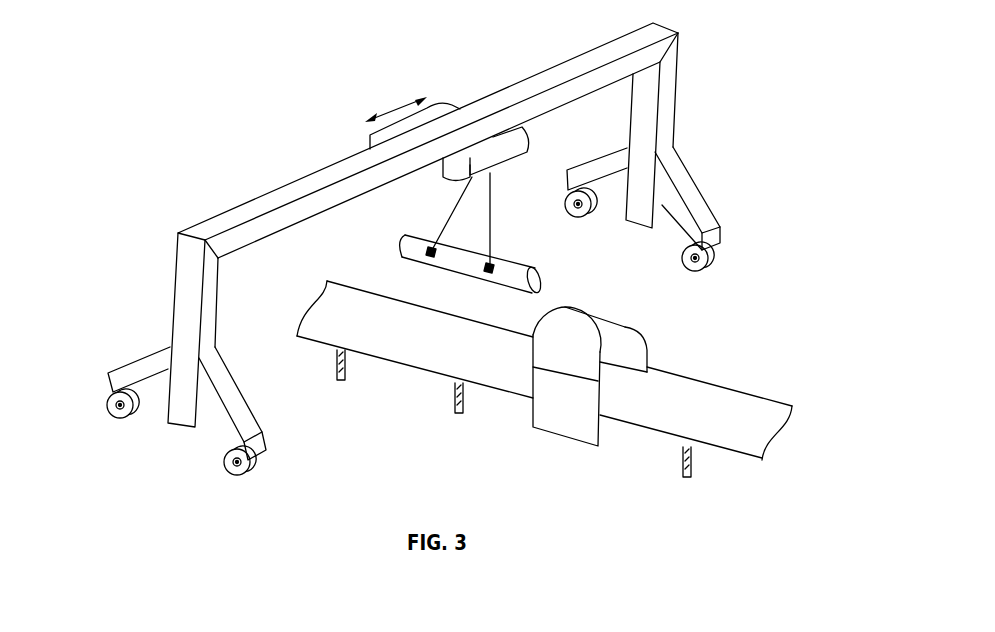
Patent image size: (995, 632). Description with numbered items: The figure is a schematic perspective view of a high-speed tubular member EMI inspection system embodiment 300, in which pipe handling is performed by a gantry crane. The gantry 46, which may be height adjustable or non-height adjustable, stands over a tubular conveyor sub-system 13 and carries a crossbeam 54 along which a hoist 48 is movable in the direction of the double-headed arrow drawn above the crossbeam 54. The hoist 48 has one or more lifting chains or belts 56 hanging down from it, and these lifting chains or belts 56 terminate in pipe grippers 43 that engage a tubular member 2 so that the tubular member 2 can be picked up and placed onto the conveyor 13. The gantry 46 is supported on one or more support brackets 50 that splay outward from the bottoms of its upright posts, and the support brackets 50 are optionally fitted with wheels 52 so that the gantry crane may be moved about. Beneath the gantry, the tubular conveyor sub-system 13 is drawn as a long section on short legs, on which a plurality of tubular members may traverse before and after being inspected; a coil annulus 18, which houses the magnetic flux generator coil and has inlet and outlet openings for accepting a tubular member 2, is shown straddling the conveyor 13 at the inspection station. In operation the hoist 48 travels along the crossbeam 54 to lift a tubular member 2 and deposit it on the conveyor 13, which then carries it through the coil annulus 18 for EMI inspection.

The high-speed EMI inspection system embodiment 300 is at (733, 26).
The crossbeam 54 is at (307, 178).
The gantry 46 is at (667, 107).
The support brackets 50 is at (607, 152).
The wheels 52 is at (583, 217).
The hoist 48 is at (495, 137).
The lifting chains or belts 56 is at (497, 222).
The tubular member 2 is at (540, 268).
The pipe grippers 43 is at (430, 253).
The tubular conveyor sub-system 13 is at (417, 370).
The coil annulus 18 is at (613, 318).